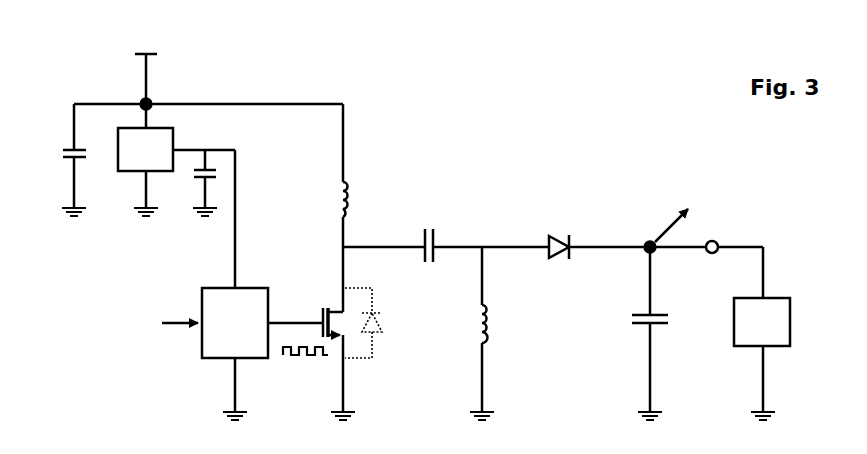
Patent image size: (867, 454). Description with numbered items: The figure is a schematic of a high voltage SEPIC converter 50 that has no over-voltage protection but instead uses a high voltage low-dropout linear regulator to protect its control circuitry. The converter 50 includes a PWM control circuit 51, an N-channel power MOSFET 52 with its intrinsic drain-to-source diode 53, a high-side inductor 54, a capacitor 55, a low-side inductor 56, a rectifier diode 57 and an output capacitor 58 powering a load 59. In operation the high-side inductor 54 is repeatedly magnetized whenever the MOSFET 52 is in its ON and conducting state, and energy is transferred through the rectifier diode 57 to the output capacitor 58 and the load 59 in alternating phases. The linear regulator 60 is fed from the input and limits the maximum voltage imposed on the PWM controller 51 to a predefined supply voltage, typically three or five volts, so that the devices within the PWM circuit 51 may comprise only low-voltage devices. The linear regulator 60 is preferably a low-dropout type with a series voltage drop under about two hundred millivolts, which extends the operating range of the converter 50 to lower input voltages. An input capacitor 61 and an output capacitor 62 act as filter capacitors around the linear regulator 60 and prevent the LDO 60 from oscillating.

The SEPIC converter 50 is at (630, 68).
The PWM control circuit 51 is at (254, 358).
The N-channel power MOSFET 52 is at (322, 309).
The intrinsic drain-to-source diode 53 is at (383, 325).
The high-side inductor 54 is at (350, 191).
The capacitor 55 is at (430, 265).
The low-side inductor 56 is at (488, 306).
The rectifier diode 57 is at (571, 238).
The output capacitor 58 is at (631, 315).
The load 59 is at (790, 298).
The linear regulator 60 is at (117, 129).
The input capacitor 61 is at (63, 149).
The output capacitor 62 is at (193, 180).